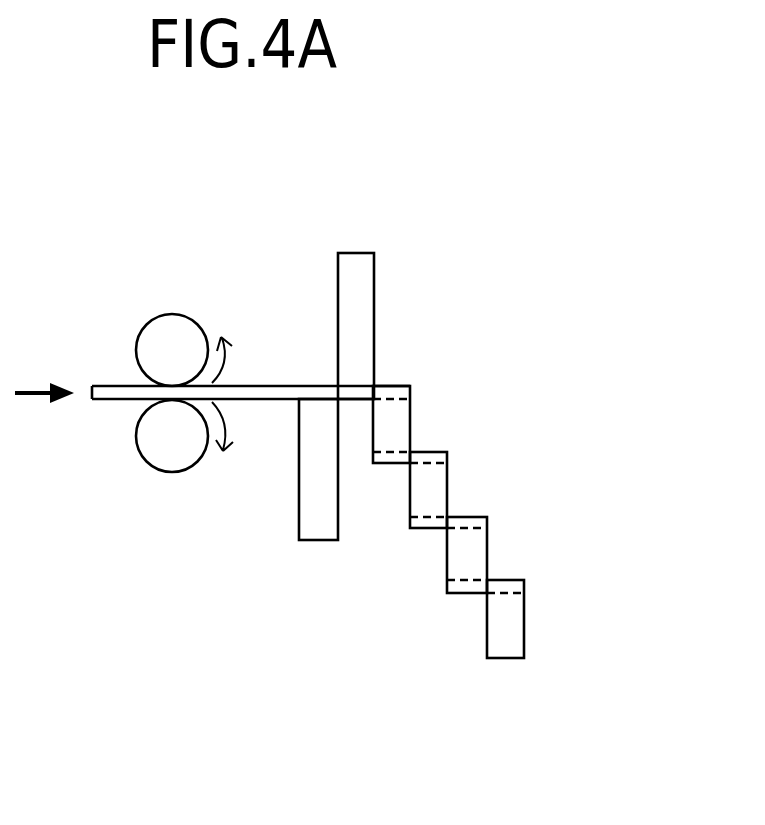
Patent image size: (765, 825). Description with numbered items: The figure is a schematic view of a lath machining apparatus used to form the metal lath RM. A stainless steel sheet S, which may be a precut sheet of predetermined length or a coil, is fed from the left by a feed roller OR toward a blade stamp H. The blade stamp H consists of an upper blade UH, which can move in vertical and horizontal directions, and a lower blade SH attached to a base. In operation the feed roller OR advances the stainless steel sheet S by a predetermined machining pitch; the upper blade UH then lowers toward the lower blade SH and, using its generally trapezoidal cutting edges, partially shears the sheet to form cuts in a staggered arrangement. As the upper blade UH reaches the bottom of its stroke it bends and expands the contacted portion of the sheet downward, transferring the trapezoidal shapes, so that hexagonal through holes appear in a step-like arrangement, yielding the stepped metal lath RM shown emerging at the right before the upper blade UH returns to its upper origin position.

The stainless steel sheet S is at (248, 385).
The feed roller OR is at (177, 326).
The blade stamp H is at (457, 436).
The upper blade UH is at (365, 303).
The lower blade SH is at (321, 528).
The metal lath RM is at (557, 628).